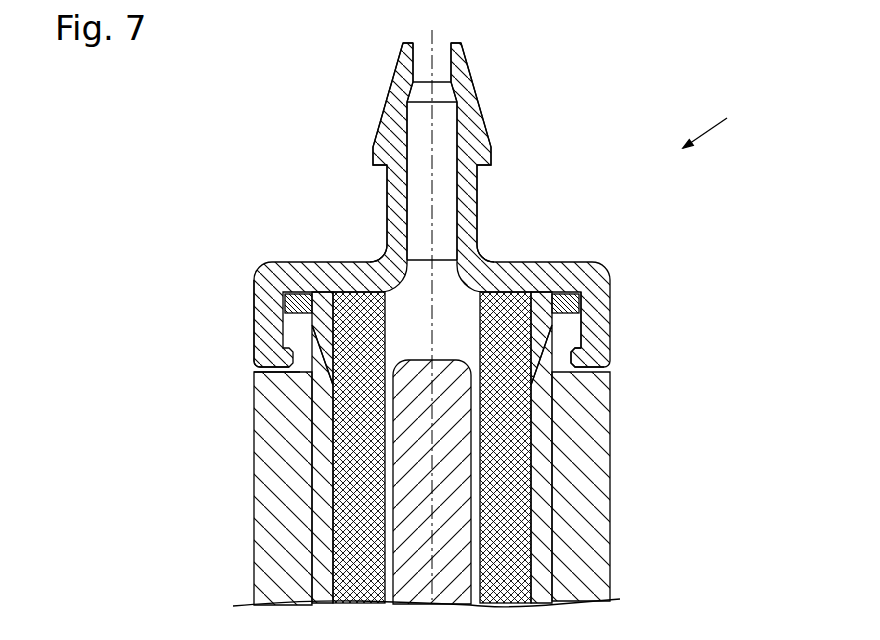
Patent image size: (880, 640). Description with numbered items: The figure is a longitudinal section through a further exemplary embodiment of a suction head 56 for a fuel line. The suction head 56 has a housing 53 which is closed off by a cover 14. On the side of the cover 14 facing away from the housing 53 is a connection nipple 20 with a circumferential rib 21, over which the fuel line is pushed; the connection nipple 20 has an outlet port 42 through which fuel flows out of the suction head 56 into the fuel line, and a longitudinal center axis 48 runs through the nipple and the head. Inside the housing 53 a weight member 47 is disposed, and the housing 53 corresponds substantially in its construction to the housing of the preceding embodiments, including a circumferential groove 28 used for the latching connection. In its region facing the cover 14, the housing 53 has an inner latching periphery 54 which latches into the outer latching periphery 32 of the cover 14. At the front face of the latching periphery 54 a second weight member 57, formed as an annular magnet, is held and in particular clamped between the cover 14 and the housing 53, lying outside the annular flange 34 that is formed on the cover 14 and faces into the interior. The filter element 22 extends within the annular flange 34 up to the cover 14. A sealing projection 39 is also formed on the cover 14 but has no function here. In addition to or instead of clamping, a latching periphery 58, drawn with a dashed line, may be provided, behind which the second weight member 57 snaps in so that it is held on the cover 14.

The cover 14 is at (520, 262).
The connection nipple 20 is at (397, 220).
The circumferential rib 21 is at (375, 150).
The filter element 22 is at (332, 533).
The circumferential groove 28 is at (255, 378).
The outer latching periphery 32 is at (253, 353).
The annular flange 34 is at (572, 345).
The sealing projection 39 is at (332, 268).
The outlet port 42 is at (448, 41).
The weight member 47 is at (457, 570).
The longitudinal center axis 48 is at (436, 155).
The housing 53 is at (595, 463).
The inner latching periphery 54 is at (292, 332).
The suction head 56 is at (719, 124).
The second weight member 57 is at (568, 292).
The latching periphery 58 is at (579, 316).